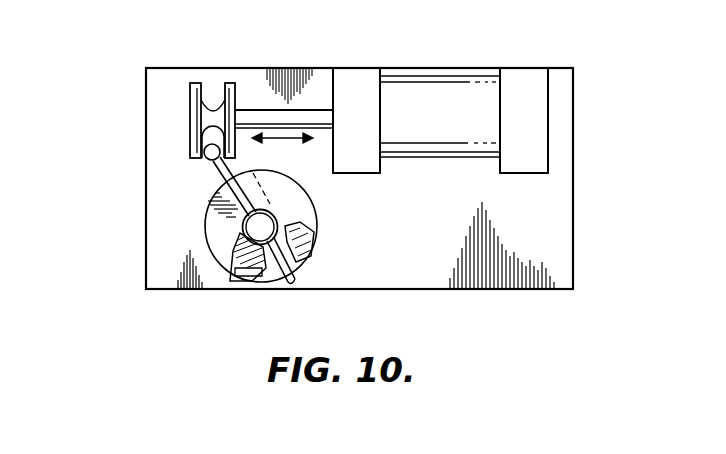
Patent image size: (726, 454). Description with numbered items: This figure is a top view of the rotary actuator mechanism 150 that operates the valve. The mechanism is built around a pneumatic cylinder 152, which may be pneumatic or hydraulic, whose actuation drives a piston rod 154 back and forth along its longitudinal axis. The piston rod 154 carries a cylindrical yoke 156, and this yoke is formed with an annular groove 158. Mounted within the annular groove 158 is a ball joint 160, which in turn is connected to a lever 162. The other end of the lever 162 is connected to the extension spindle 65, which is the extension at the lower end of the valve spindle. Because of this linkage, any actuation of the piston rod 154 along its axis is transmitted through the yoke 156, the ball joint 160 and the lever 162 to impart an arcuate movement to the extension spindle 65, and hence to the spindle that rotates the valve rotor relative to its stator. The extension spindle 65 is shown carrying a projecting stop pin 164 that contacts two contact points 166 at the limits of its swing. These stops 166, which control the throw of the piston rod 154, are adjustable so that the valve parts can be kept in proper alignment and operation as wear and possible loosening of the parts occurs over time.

The rotary actuator mechanism 150 is at (186, 57).
The pneumatic cylinder 152 is at (428, 80).
The piston rod 154 is at (282, 108).
The cylindrical yoke 156 is at (192, 105).
The annular groove 158 is at (222, 106).
The ball joint 160 is at (206, 159).
The lever 162 is at (218, 174).
The extension spindle 65 is at (279, 211).
The projecting stop pin 164 is at (293, 283).
The contact points 166 is at (310, 263).